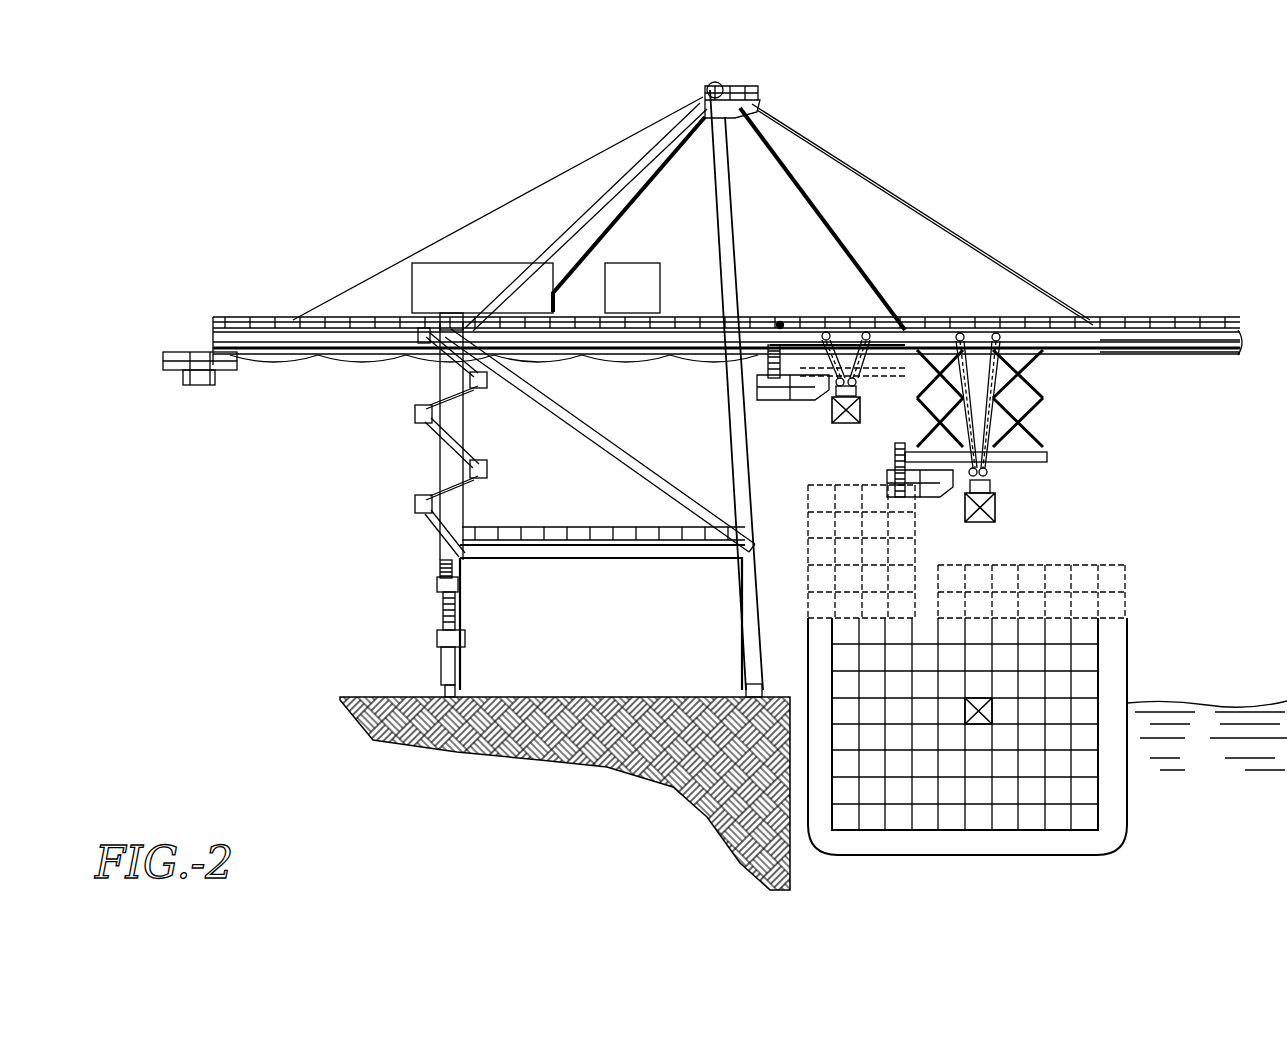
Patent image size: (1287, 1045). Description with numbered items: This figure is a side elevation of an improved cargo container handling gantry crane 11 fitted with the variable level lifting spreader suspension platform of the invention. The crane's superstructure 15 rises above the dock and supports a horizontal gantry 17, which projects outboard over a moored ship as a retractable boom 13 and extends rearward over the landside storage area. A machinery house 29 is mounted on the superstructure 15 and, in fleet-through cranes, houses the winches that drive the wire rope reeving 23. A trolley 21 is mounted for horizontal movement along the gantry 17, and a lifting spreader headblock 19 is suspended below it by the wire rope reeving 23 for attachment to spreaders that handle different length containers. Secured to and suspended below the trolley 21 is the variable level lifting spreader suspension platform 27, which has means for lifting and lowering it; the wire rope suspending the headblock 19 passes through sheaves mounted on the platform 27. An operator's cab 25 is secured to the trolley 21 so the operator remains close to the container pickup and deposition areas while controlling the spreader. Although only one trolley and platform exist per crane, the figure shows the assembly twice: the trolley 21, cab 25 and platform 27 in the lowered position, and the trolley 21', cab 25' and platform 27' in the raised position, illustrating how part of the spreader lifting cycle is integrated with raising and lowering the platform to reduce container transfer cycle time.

The cargo container handling gantry crane 11 is at (1136, 245).
The retractable boom 13 is at (1217, 340).
The superstructure 15 is at (735, 96).
The horizontal gantry 17 is at (613, 350).
The lifting spreader headblock 19 is at (990, 488).
The trolley 21 is at (978, 376).
The trolley 21' is at (846, 347).
The wire rope reeving 23 is at (1000, 385).
The operator's cab 25 is at (920, 493).
The operator's cab 25' is at (793, 399).
The variable level lifting spreader suspension platform 27 is at (1004, 461).
The variable level lifting spreader suspension platform 27' is at (837, 378).
The machinery house 29 is at (430, 268).